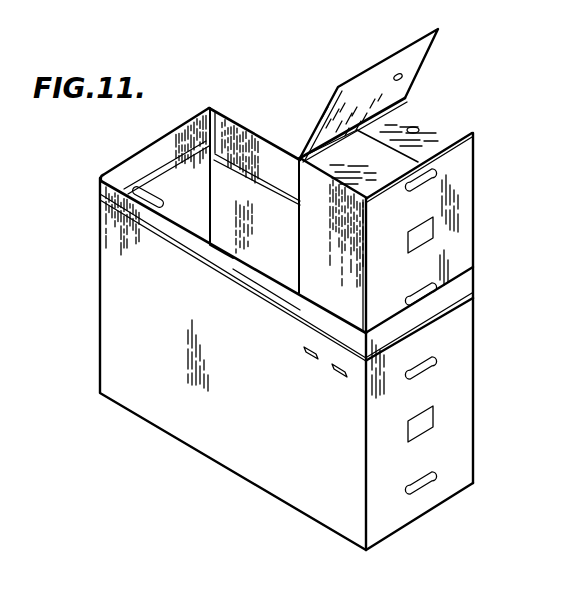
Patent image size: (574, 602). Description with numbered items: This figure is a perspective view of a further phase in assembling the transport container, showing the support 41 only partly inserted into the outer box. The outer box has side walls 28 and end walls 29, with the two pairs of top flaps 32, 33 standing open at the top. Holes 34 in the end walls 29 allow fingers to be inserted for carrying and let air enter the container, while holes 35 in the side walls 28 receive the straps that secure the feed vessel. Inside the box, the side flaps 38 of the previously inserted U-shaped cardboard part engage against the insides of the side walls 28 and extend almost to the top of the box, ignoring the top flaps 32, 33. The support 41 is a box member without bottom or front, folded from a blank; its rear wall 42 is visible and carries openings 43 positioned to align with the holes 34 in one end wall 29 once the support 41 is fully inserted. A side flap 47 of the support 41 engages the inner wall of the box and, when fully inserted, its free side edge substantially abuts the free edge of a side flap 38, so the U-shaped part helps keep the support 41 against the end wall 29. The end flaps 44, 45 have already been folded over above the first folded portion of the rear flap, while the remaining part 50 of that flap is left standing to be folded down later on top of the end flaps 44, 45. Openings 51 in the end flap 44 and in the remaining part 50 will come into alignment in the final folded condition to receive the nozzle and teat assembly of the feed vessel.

The side wall 28 is at (258, 463).
The end wall 29 is at (461, 320).
The top flap 32 is at (233, 269).
The top flap 33 is at (163, 143).
The hole 34 is at (113, 182).
The hole 35 is at (340, 376).
The side flap 38 is at (258, 197).
The support 41 is at (461, 121).
The rear wall 42 is at (462, 245).
The opening 43 is at (430, 233).
The end flap 44 is at (323, 160).
The end flap 45 is at (474, 134).
The side flap 47 is at (318, 292).
The remaining part of flap 50 is at (418, 50).
The opening 51 is at (414, 127).